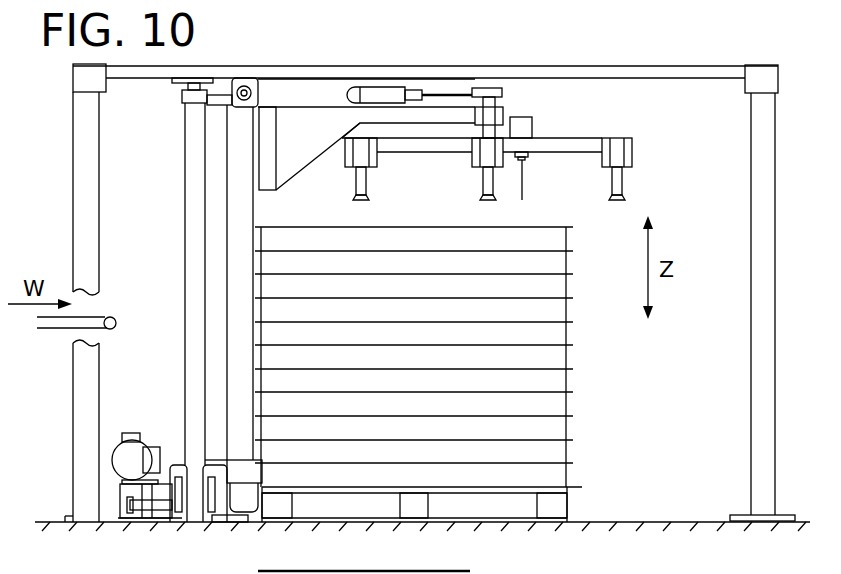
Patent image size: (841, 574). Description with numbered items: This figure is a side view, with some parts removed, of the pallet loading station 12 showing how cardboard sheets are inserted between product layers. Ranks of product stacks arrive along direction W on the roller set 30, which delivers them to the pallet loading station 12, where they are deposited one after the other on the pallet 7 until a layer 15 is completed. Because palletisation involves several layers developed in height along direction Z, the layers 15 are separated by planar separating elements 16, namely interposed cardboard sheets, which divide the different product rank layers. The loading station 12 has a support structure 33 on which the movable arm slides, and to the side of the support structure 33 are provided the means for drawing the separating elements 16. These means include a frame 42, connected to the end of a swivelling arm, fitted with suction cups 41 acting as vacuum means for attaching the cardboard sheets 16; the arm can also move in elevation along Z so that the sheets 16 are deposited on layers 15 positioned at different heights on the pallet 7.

The pallet 7 is at (268, 510).
The pallet loading station 12 is at (168, 191).
The layer 15 is at (560, 458).
The planar separating elements 16 is at (568, 368).
The roller set 30 is at (60, 334).
The support structure 33 is at (757, 143).
The suction cups 41 is at (620, 183).
The frame 42 is at (558, 142).